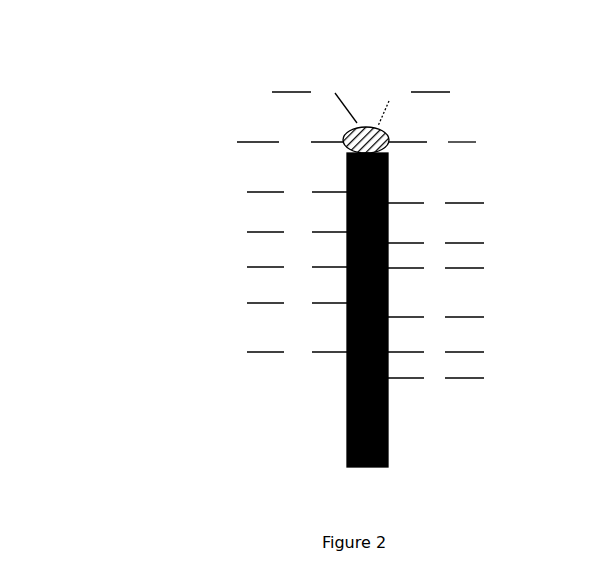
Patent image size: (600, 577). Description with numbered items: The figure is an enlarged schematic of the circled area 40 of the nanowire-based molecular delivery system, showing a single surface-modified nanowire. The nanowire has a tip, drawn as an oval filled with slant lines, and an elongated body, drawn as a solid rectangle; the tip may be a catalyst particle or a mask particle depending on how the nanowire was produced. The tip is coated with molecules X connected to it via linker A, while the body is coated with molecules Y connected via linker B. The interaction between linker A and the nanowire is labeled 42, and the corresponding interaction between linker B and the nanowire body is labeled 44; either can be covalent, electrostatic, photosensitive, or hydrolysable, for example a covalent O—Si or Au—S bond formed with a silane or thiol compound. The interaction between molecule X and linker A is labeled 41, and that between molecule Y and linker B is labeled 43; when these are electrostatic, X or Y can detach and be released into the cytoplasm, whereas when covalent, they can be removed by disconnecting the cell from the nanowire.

The circled area 40 is at (122, 58).
The interaction between molecule X and linker A 41 is at (298, 78).
The interaction between linker A and the NW 42 is at (348, 107).
The interaction between molecule Y and linker B 43 is at (275, 354).
The interaction between linker B and the NW 44 is at (325, 354).